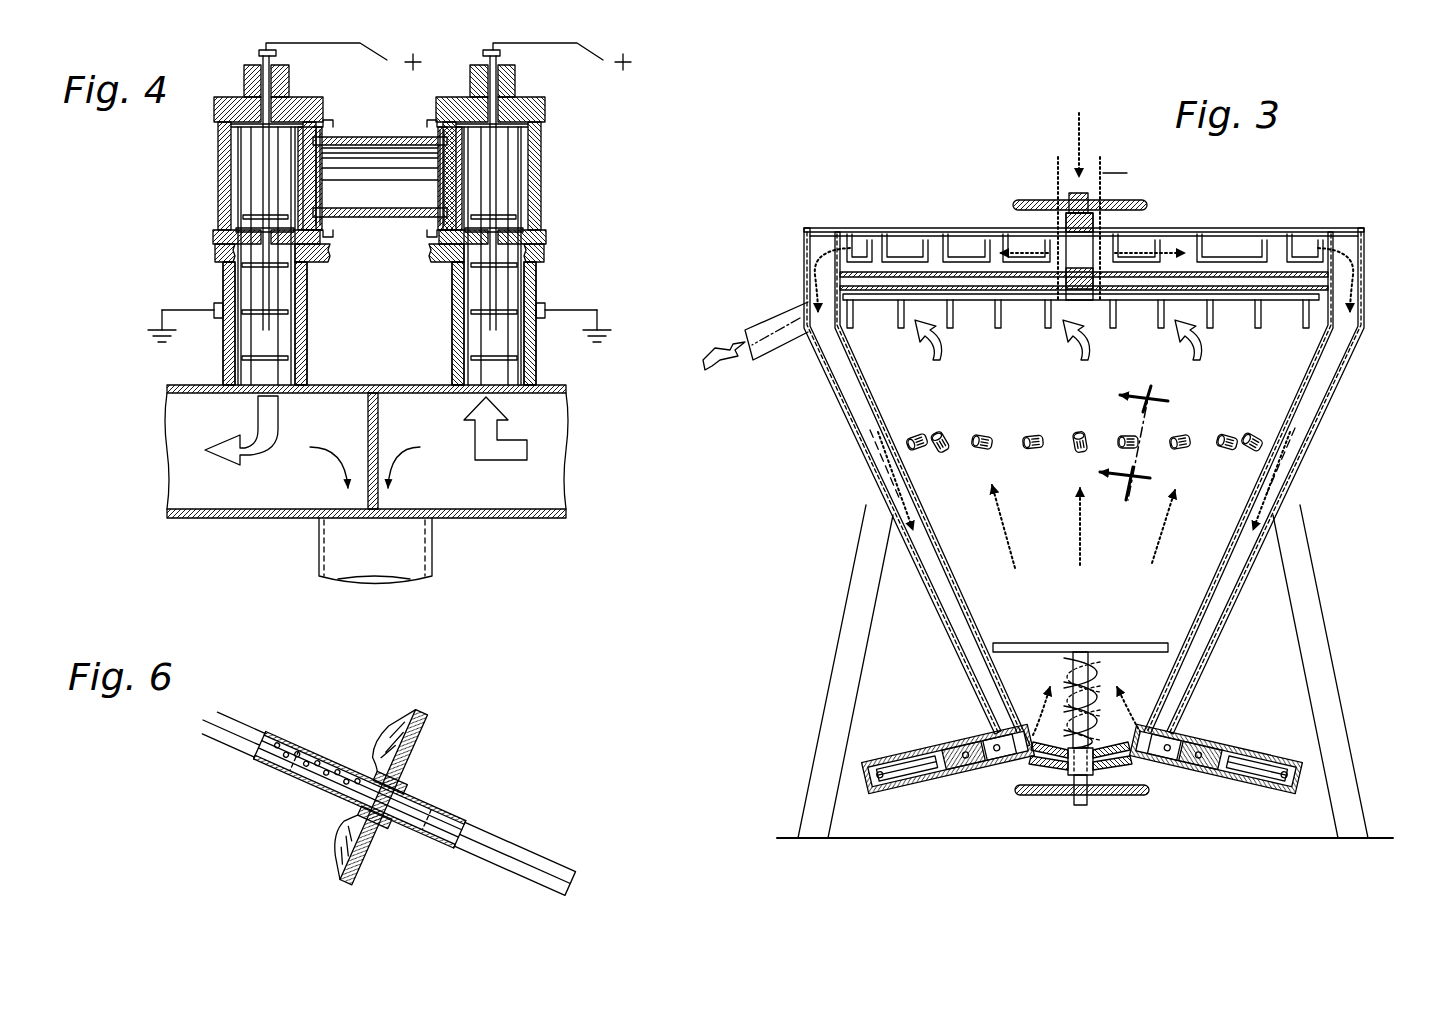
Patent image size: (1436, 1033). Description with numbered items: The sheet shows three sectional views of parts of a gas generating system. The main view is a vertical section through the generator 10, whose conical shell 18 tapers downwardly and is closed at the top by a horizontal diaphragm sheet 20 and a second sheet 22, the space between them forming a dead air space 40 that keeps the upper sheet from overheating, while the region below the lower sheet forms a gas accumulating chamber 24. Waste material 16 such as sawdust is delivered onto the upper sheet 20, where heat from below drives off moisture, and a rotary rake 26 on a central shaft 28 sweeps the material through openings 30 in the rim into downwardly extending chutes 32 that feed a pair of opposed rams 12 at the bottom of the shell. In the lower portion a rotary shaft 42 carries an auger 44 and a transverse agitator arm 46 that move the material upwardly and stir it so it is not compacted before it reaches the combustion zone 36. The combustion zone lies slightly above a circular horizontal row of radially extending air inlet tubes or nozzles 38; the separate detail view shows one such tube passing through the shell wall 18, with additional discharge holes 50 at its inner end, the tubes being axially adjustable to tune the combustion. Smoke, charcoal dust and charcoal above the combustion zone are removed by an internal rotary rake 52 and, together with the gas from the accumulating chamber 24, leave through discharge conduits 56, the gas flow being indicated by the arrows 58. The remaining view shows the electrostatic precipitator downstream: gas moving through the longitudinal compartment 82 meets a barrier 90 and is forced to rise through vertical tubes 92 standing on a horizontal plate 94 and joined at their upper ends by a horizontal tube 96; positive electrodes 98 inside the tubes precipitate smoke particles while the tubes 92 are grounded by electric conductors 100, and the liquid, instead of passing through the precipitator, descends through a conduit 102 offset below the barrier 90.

In FIG. 3, the generator 10 is at (1347, 416).
In FIG. 3, the opposed rams 12 is at (933, 750).
In FIG. 3, the waste material 16 is at (1043, 703).
In FIG. 3, the conical shell 18 is at (1297, 395).
In FIG. 6, the conical shell 18 is at (420, 738).
In FIG. 3, the horizontal diaphragm sheet 20 is at (1280, 230).
In FIG. 3, the second sheet 22 is at (1020, 292).
In FIG. 3, the gas accumulating chamber 24 is at (886, 357).
In FIG. 3, the rotary rake 26 is at (955, 232).
In FIG. 3, the central shaft 28 is at (1082, 193).
In FIG. 3, the openings 30 is at (833, 232).
In FIG. 3, the chutes 32 is at (860, 415).
In FIG. 3, the combustion zone 36 is at (1033, 423).
In FIG. 3, the air inlet tubes or nozzles 38 is at (984, 437).
In FIG. 6, the air inlet tubes or nozzles 38 is at (308, 745).
In FIG. 3, the dead air space 40 is at (893, 280).
In FIG. 3, the rotary shaft 42 is at (1082, 805).
In FIG. 3, the auger 44 is at (1120, 690).
In FIG. 3, the transverse agitator arm 46 is at (1123, 643).
In FIG. 6, the discharge holes 50 is at (287, 777).
In FIG. 3, the internal rotary rake 52 is at (990, 300).
In FIG. 3, the discharge conduits 56 is at (778, 315).
In FIG. 4, the gas flow arrows 58 is at (272, 432).
In FIG. 3, the gas flow arrows 58 is at (1090, 357).
In FIG. 4, the longitudinal compartment 82 is at (280, 520).
In FIG. 4, the barrier 90 is at (378, 428).
In FIG. 4, the vertical tubes 92 is at (222, 285).
In FIG. 4, the horizontal plate 94 is at (197, 385).
In FIG. 4, the horizontal tube 96 is at (400, 230).
In FIG. 4, the positive electrodes 98 is at (265, 168).
In FIG. 4, the electric conductors 100 is at (162, 308).
In FIG. 4, the conduit 102 is at (386, 586).